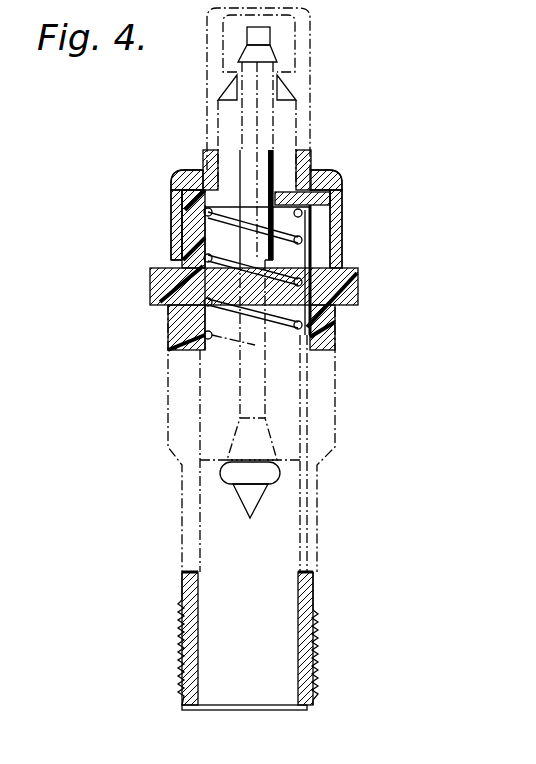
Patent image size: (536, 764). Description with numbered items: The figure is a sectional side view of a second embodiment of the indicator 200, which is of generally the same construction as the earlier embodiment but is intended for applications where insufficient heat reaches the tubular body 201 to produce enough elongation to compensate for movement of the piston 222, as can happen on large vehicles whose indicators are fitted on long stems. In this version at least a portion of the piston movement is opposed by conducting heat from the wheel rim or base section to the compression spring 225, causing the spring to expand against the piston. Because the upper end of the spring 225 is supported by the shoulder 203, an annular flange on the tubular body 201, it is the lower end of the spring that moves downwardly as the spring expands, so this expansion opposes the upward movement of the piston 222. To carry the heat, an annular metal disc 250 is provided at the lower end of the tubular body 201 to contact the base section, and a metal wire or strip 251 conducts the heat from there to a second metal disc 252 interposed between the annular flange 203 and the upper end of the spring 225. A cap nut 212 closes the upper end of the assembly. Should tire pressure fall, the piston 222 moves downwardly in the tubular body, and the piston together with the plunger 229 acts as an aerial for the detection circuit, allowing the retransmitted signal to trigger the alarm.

The indicator 200 is at (384, 151).
The tubular body 201 is at (341, 352).
The shoulder 203 is at (205, 165).
The cap nut 212 is at (350, 145).
The piston 222 is at (210, 368).
The compression spring 225 is at (210, 233).
The plunger 229 is at (272, 34).
The annular metal disc 250 is at (307, 710).
The metal wire or strip 251 is at (305, 580).
The second metal disc 252 is at (338, 180).